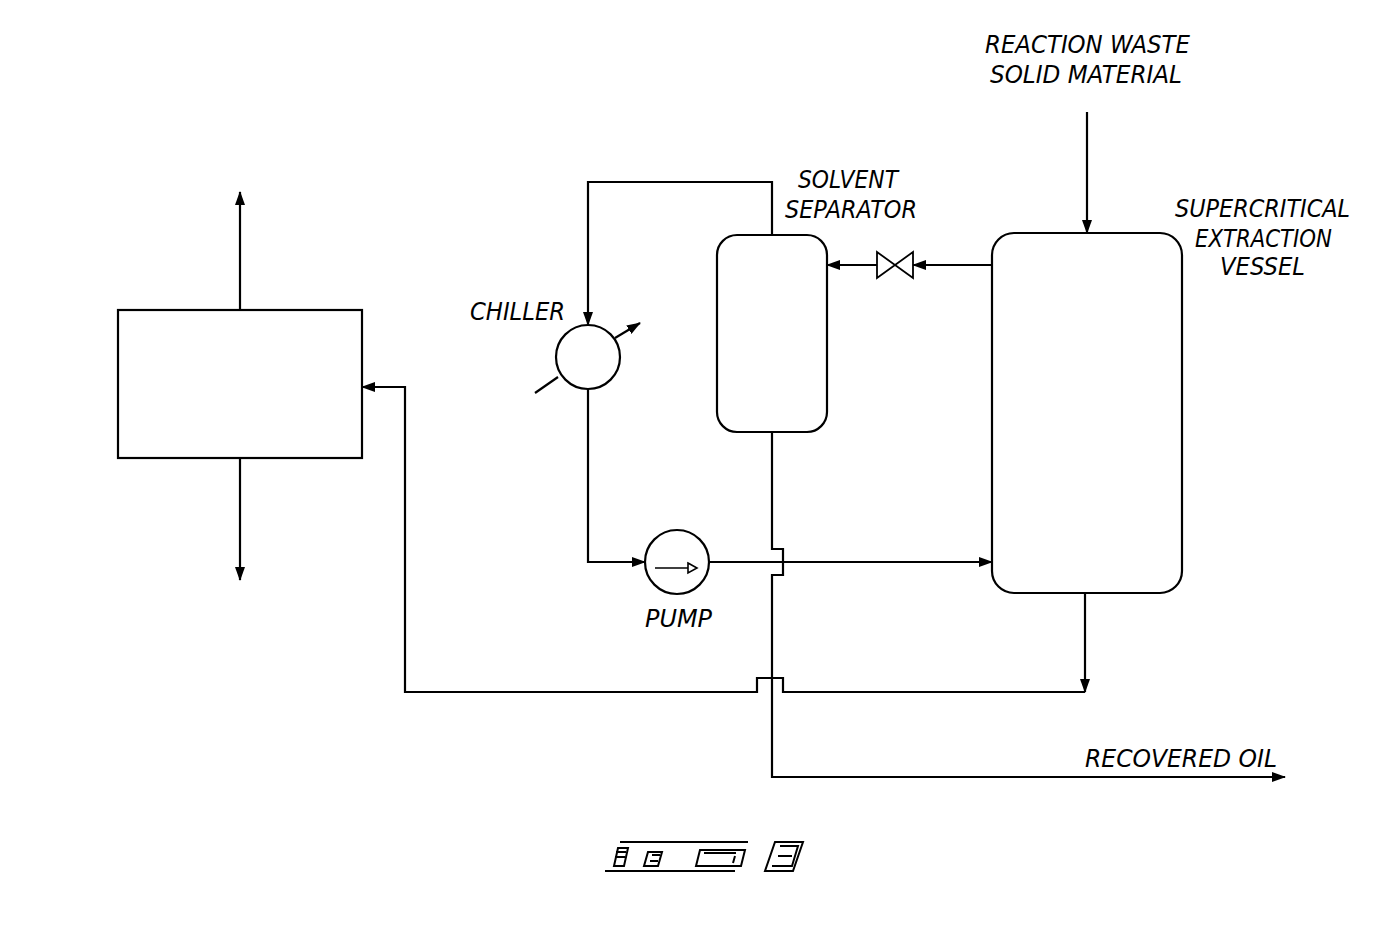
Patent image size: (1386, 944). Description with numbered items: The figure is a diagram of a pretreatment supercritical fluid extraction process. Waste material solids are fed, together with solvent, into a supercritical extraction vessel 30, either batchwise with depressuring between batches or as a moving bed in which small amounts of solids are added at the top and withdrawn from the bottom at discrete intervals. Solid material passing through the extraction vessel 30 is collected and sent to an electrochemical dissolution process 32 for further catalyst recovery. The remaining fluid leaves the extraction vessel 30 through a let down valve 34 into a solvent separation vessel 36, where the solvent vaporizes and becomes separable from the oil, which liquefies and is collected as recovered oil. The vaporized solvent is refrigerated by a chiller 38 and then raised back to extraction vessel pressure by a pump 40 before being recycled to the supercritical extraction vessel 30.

The supercritical extraction vessel 30 is at (1162, 385).
The electrochemical dissolution process 32 is at (350, 347).
The let down valve 34 is at (892, 255).
The solvent separation vessel 36 is at (823, 370).
The chiller 38 is at (605, 370).
The pump 40 is at (658, 540).